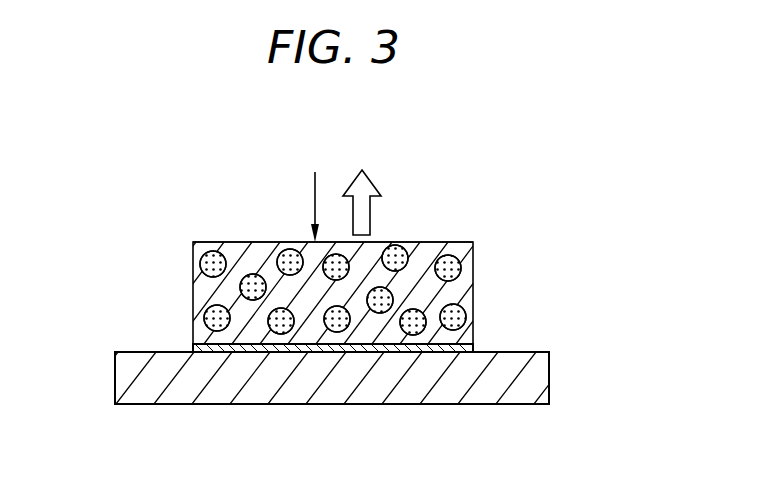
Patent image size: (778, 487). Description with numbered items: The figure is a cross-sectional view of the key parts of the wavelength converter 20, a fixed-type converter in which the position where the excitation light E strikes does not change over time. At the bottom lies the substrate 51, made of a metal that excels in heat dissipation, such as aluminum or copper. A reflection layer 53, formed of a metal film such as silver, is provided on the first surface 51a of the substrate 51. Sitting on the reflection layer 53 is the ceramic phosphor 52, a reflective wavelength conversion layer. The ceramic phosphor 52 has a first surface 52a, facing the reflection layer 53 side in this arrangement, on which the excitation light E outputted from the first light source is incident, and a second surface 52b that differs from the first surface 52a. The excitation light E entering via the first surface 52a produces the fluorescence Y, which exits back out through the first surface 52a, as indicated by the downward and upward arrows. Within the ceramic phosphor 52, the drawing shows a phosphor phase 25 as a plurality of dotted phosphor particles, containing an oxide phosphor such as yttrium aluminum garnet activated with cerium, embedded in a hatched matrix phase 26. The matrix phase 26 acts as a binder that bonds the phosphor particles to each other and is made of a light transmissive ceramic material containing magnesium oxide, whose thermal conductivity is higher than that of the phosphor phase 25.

The wavelength converter 20 is at (500, 153).
The phosphor phase 25 is at (201, 262).
The matrix phase 26 is at (201, 293).
The substrate 51 is at (542, 372).
The first surface 51a is at (167, 352).
The ceramic phosphor 52 is at (486, 261).
The first surface 52a is at (250, 344).
The second surface 52b is at (228, 241).
The reflection layer 53 is at (472, 348).
The excitation light E is at (314, 203).
The fluorescence Y is at (370, 187).